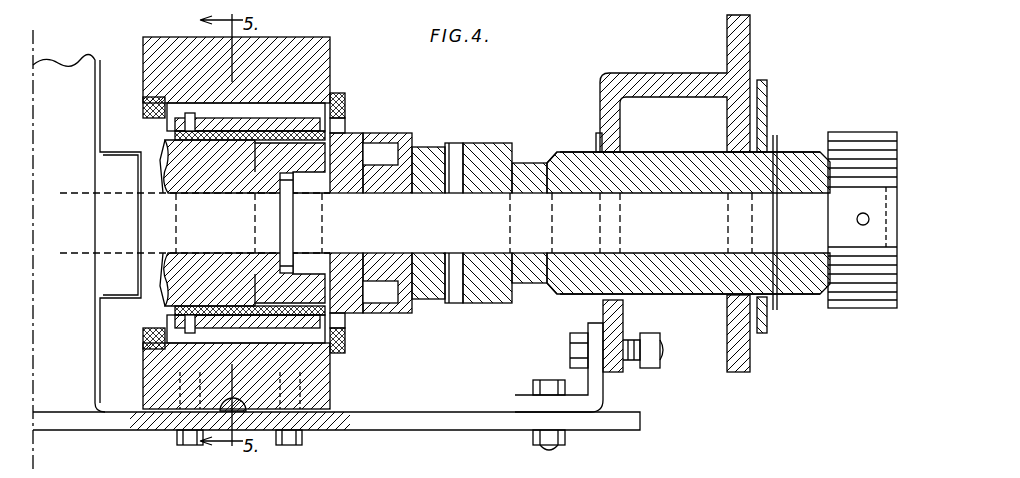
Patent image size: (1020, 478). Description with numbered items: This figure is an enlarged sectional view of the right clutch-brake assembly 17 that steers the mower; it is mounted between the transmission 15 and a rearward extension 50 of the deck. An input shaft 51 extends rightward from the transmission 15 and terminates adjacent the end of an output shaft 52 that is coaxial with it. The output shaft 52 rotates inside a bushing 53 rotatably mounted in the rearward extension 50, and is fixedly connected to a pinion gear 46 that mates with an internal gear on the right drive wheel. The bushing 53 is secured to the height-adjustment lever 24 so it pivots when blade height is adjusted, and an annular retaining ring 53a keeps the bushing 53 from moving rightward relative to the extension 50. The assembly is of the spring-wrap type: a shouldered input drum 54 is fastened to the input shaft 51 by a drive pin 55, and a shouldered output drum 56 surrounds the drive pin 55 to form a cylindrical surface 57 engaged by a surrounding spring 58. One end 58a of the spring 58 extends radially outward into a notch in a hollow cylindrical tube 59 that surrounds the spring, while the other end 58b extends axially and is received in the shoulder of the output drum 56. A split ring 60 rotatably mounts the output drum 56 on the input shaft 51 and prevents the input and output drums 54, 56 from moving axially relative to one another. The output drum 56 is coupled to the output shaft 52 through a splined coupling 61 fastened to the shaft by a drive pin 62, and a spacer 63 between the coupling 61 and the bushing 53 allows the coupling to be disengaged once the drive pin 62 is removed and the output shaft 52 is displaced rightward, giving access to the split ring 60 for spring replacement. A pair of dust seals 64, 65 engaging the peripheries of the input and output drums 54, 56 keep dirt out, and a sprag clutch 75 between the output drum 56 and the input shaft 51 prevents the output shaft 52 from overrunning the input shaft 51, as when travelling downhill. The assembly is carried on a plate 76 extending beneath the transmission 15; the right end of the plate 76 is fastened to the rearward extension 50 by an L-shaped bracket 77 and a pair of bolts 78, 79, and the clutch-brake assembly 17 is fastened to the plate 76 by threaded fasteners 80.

The transmission 15 is at (62, 66).
The right clutch-brake assembly 17 is at (312, 37).
The height-adjustment lever 24 is at (768, 98).
The pinion gear 46 is at (858, 133).
The rearward extension 50 is at (610, 92).
The input shaft 51 is at (222, 226).
The output shaft 52 is at (677, 224).
The bushing 53 is at (675, 152).
The annular retaining ring 53a is at (598, 148).
The input drum 54 is at (160, 140).
The drive pin 55 is at (283, 226).
The output drum 56 is at (362, 318).
The cylindrical surface 57 is at (210, 296).
The spring 58 is at (198, 306).
The spring end 58a is at (190, 117).
The other spring end 58b is at (345, 128).
The hollow cylindrical tube 59 is at (332, 72).
The split ring 60 is at (410, 305).
The splined coupling 61 is at (487, 147).
The drive pin 62 is at (453, 147).
The spacer 63 is at (545, 283).
The dust seal 64 is at (345, 105).
The dust seal 65 is at (143, 106).
The sprag clutch 75 is at (348, 193).
The plate 76 is at (398, 414).
The L-shaped bracket 77 is at (603, 394).
The bolt 78 is at (658, 352).
The bolt 79 is at (560, 450).
The threaded fasteners 80 is at (177, 440).